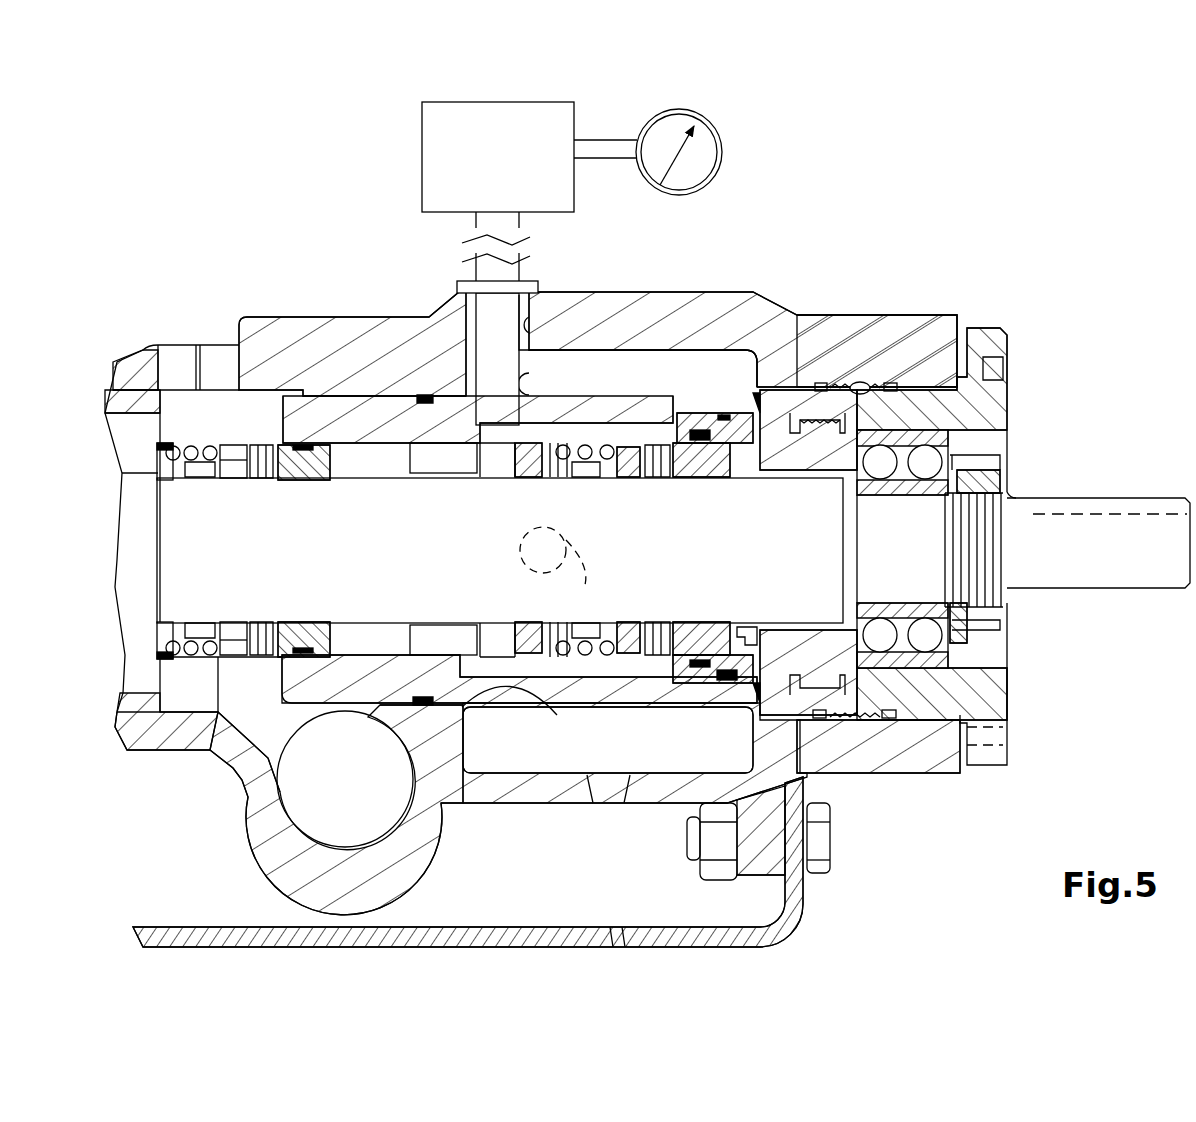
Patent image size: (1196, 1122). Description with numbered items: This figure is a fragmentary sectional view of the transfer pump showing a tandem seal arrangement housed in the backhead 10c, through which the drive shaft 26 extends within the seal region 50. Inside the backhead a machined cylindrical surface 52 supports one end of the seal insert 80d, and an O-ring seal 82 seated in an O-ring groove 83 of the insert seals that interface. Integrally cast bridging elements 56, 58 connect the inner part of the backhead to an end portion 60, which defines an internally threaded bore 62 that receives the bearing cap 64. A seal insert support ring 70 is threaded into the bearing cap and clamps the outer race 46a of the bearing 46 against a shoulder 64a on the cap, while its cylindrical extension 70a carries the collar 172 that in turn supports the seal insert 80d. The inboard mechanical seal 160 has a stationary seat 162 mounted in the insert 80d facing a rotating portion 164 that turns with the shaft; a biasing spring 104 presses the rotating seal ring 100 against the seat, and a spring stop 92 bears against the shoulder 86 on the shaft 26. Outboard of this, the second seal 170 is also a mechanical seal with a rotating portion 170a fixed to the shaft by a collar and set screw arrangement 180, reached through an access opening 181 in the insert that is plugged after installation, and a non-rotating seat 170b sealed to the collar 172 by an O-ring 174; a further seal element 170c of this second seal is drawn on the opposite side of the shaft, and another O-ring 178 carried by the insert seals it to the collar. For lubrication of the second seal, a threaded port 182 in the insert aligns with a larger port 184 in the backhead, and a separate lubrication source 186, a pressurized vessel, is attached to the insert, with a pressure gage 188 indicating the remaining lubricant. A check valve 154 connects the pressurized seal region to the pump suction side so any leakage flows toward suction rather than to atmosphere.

The backhead 10c is at (832, 222).
The shaft 26 is at (416, 560).
The bearing 46 is at (905, 603).
The outer race 46a is at (950, 672).
The seal region 50 is at (490, 755).
The cylindrical surface 52 is at (528, 695).
The bridging element 56 is at (683, 295).
The bridging element 58 is at (532, 800).
The end portion 60 is at (947, 312).
The internally threaded bore 62 is at (880, 390).
The bearing cap 64 is at (990, 402).
The shoulder 64a is at (1000, 465).
The seal insert support ring 70 is at (800, 640).
The cylindrical extension 70a is at (745, 627).
The seal insert 80d is at (600, 405).
The O-ring seal 82 is at (412, 706).
The O-ring groove 83 is at (428, 395).
The shoulder 86 is at (160, 540).
The spring stop 92 is at (160, 660).
The rotating seal ring 100 is at (262, 624).
The biasing spring 104 is at (185, 662).
The check valve 154 is at (706, 350).
The mechanical seal 160 is at (238, 670).
The stationary seat 162 is at (305, 480).
The rotating portion 164 is at (188, 447).
The second seal 170 is at (600, 490).
The rotating portion 170a is at (577, 479).
The non-rotating seat 170b is at (700, 468).
The seal stationary ring 170c is at (517, 628).
The collar 172 is at (690, 682).
The O-ring 174 is at (701, 668).
The O-ring 178 is at (722, 413).
The collar and set screw arrangement 180 is at (508, 465).
The access opening 181 is at (561, 566).
The threaded port 182 is at (529, 383).
The port 184 is at (533, 308).
The source of separate lubrication 186 is at (517, 163).
The pressure gage 188 is at (716, 158).